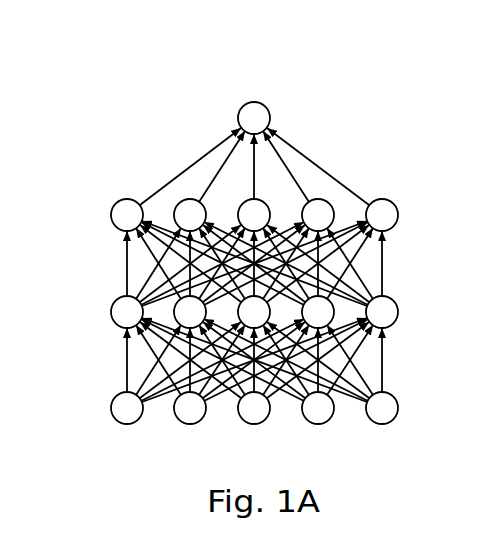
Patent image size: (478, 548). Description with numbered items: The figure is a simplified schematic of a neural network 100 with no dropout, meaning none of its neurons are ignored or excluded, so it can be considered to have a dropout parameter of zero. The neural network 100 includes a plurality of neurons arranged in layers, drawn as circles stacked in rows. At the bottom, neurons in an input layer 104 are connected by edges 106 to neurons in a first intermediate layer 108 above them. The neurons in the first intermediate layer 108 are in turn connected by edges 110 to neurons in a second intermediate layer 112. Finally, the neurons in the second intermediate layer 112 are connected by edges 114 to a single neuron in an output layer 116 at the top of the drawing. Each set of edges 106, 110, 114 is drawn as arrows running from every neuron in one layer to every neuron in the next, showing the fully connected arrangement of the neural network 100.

The neural network 100 is at (130, 95).
The input layer 104 is at (408, 391).
The edges 106 is at (355, 352).
The first intermediate layer 108 is at (408, 296).
The edges 110 is at (355, 257).
The second intermediate layer 112 is at (408, 199).
The edges 114 is at (291, 172).
The output layer 116 is at (258, 112).